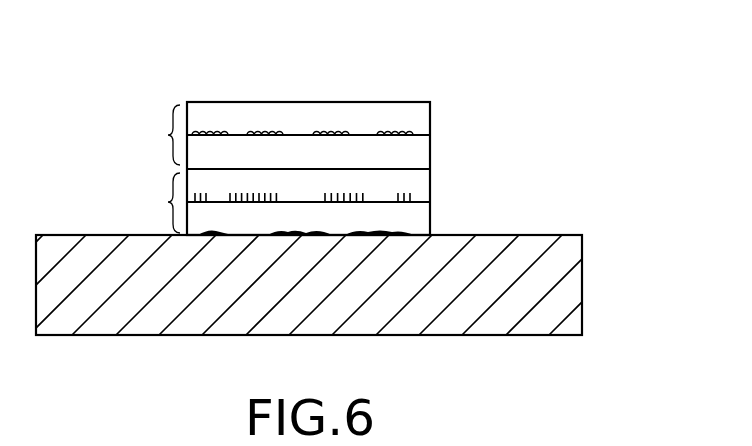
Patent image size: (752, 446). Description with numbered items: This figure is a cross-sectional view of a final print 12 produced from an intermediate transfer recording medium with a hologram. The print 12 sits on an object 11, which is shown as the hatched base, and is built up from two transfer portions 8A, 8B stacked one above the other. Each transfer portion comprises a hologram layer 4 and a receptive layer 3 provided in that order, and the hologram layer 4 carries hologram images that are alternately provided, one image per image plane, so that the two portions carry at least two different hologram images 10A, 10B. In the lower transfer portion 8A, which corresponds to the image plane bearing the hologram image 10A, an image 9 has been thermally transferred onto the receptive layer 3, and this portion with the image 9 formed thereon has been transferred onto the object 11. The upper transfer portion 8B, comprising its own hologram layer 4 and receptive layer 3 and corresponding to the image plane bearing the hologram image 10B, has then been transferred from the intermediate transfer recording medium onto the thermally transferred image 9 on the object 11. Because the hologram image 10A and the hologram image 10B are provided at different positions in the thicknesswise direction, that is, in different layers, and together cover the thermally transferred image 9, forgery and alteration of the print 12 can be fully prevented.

The receptive layer 3 is at (413, 153).
The hologram layer 4 is at (413, 114).
The transfer portion 8A is at (151, 203).
The transfer portion 8B is at (151, 135).
The thermally transferred image 9 is at (410, 233).
The hologram image 10A is at (413, 193).
The hologram image 10B is at (413, 131).
The object 11 is at (566, 259).
The print 12 is at (340, 91).